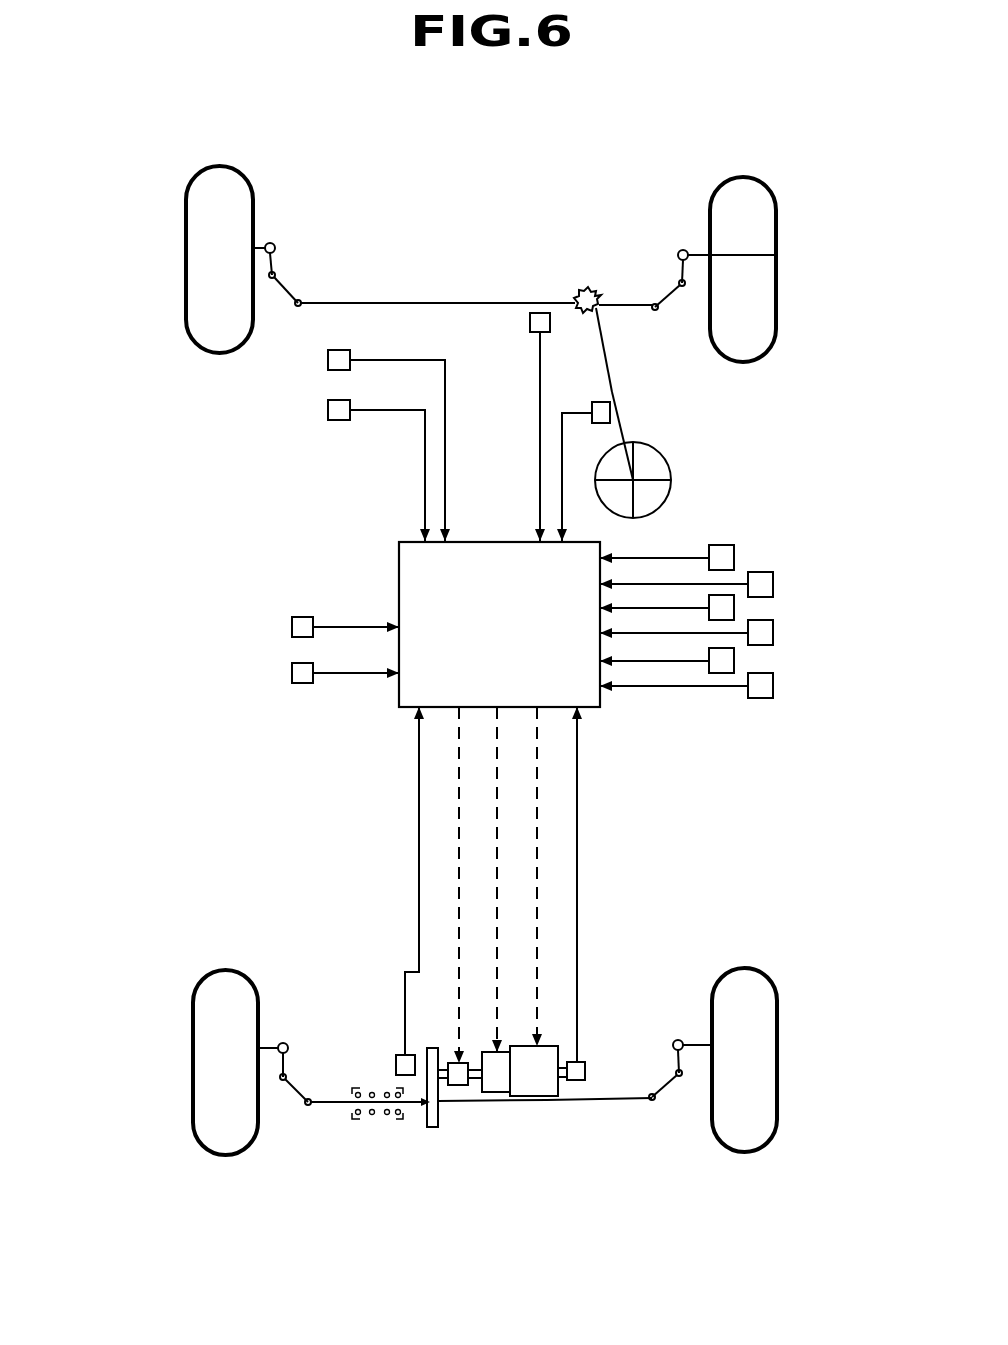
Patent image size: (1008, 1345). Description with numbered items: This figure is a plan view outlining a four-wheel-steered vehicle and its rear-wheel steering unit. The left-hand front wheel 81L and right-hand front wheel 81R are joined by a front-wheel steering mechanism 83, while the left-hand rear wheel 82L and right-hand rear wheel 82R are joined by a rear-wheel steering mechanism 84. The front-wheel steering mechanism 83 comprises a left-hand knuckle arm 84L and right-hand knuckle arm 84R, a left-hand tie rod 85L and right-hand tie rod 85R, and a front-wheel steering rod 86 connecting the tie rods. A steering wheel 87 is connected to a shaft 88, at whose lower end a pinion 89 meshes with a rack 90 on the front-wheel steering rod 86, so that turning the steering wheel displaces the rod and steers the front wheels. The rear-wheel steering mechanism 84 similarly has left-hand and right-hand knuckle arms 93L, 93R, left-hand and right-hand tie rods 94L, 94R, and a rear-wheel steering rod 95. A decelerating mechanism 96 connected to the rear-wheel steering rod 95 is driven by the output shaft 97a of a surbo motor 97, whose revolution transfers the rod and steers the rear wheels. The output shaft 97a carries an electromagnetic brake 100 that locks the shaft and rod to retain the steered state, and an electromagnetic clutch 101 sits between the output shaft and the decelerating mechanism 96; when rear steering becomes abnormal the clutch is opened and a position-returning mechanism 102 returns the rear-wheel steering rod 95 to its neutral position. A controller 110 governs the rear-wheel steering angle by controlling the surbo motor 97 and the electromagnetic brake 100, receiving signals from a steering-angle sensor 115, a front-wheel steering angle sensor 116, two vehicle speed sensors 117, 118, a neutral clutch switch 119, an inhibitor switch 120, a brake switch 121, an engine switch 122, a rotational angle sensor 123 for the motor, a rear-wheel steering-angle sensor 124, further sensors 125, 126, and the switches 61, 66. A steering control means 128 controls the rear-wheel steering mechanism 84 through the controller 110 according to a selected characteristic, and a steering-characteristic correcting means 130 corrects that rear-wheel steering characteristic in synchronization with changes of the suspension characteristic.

The left-hand front wheel 81L is at (183, 200).
The right-hand front wheel 81R is at (777, 247).
The left-hand rear wheel 82L is at (192, 1053).
The right-hand rear wheel 82R is at (777, 1048).
The front-wheel steering mechanism 83 is at (453, 292).
The left-hand knuckle arm 84L is at (303, 268).
The right-hand knuckle arm 84R is at (680, 267).
The left-hand tie rod 85L is at (284, 298).
The right-hand tie rod 85R is at (668, 297).
The front-wheel steering rod 86 is at (502, 301).
The steering wheel 87 is at (672, 466).
The shaft 88 is at (612, 393).
The pinion 89 is at (581, 285).
The rack 90 is at (599, 312).
The controller 110 is at (398, 588).
The steering-angle sensor 115 is at (592, 406).
The front-wheel steering angle sensor 116 is at (530, 323).
The vehicle speed sensor 117 is at (345, 368).
The vehicle speed sensor 118 is at (340, 420).
The manual switch 61 is at (292, 625).
The switch 66 is at (292, 670).
The neutral clutch switch 119 is at (735, 552).
The inhibitor switch 120 is at (760, 572).
The brake switch 121 is at (735, 607).
The engine switch 122 is at (773, 630).
The sensor 125 is at (735, 660).
The sensor 126 is at (773, 690).
The steering control means 128 is at (597, 765).
The steering-characteristic correcting means 130 is at (622, 717).
The rear-wheel steering-angle sensor 124 is at (395, 1063).
The left-hand knuckle arm 93L is at (288, 1058).
The right-hand knuckle arm 93R is at (677, 1060).
The left-hand tie rod 94L is at (294, 1092).
The right-hand tie rod 94R is at (667, 1085).
The rear-wheel steering rod 95 is at (600, 1103).
The decelerating mechanism 96 is at (427, 1117).
The surbo motor 97 is at (548, 1045).
The output shaft 97a is at (476, 1080).
The electromagnetic brake 100 is at (496, 1093).
The electromagnetic clutch 101 is at (452, 1062).
The position-returning mechanism 102 is at (372, 1124).
The rotational angle sensor 123 is at (585, 1068).
The rear-wheel steering mechanism 84 is at (547, 1112).